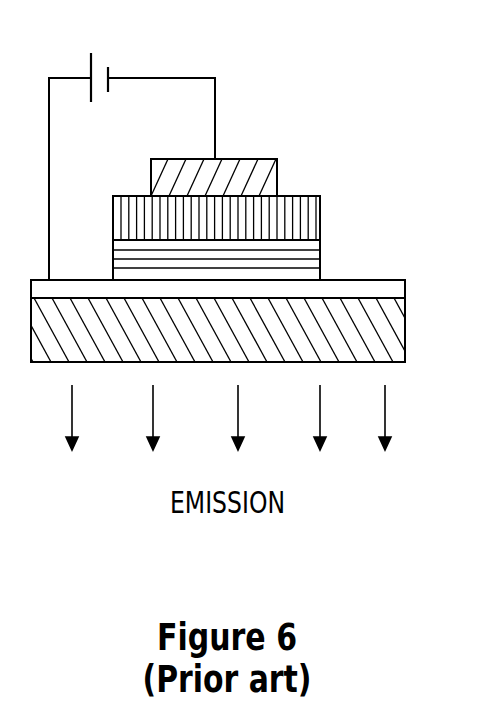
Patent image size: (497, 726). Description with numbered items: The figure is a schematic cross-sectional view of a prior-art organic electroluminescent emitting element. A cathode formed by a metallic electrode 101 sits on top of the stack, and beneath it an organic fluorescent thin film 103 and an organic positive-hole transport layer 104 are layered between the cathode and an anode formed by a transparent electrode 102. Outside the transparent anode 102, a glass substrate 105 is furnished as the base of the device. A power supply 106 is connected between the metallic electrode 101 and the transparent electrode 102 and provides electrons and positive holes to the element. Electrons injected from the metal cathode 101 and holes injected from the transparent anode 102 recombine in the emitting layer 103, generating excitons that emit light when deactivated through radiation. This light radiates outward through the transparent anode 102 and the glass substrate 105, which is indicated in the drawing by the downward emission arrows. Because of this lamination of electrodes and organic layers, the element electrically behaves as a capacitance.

The metallic electrode 101 is at (237, 171).
The transparent electrode 102 is at (250, 276).
The organic fluorescent thin film 103 is at (249, 211).
The organic positive-hole transport layer 104 is at (249, 256).
The glass substrate 105 is at (235, 330).
The power supply 106 is at (132, 154).